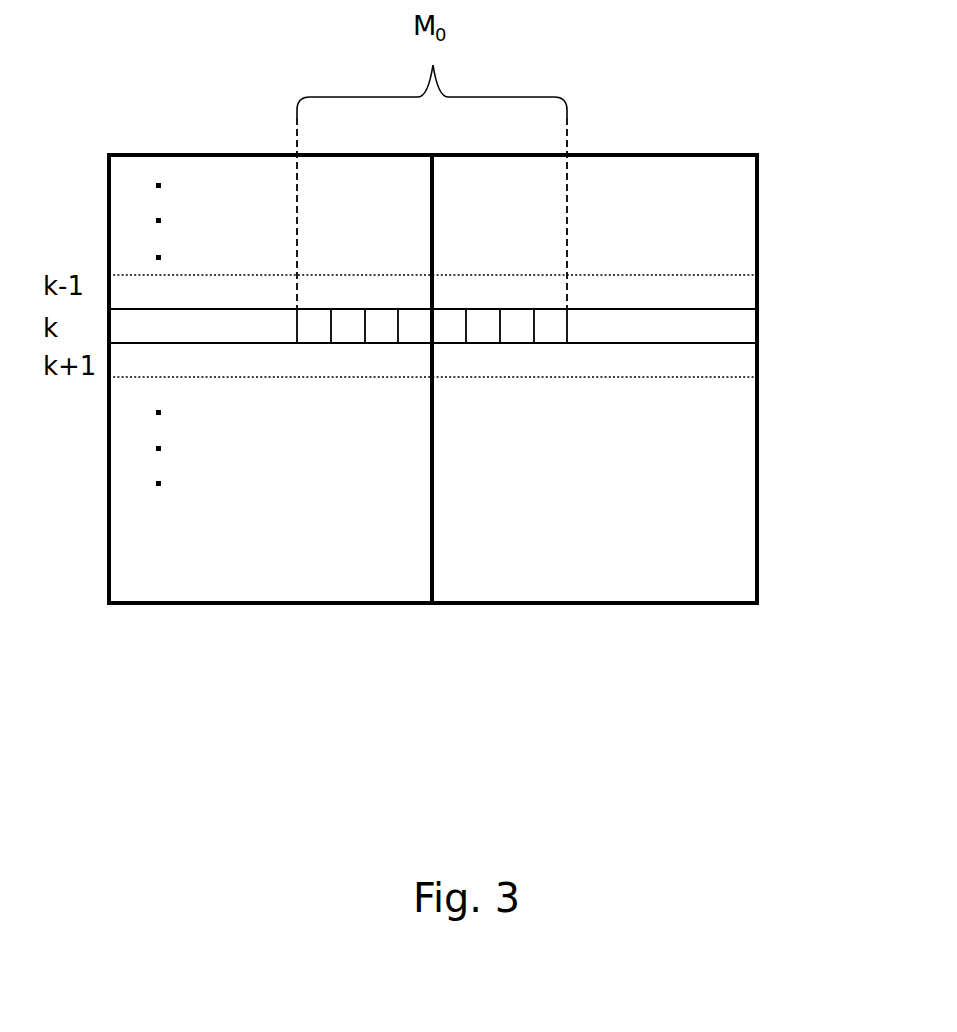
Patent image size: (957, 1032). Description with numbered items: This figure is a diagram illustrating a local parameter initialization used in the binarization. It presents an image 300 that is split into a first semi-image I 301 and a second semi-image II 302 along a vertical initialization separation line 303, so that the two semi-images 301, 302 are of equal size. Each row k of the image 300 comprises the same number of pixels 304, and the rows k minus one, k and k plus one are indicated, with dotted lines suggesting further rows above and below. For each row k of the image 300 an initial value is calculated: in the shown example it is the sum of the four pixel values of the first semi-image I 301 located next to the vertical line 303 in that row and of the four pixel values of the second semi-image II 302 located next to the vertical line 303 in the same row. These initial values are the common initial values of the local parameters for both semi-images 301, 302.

The image 300 is at (872, 192).
The first semi-image I 301 is at (242, 603).
The second semi-image II 302 is at (622, 603).
The vertical initialization separation line 303 is at (433, 553).
The pixels 304 is at (567, 323).